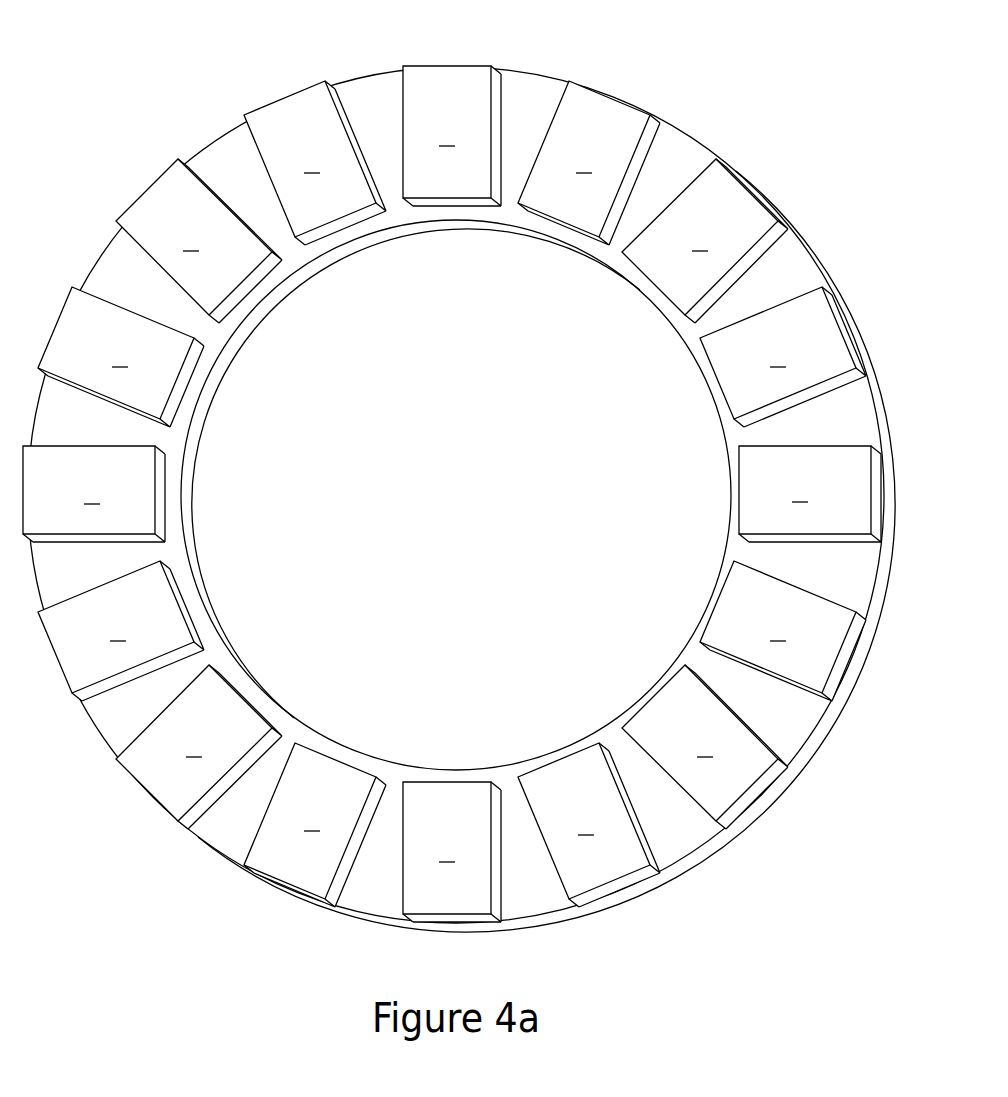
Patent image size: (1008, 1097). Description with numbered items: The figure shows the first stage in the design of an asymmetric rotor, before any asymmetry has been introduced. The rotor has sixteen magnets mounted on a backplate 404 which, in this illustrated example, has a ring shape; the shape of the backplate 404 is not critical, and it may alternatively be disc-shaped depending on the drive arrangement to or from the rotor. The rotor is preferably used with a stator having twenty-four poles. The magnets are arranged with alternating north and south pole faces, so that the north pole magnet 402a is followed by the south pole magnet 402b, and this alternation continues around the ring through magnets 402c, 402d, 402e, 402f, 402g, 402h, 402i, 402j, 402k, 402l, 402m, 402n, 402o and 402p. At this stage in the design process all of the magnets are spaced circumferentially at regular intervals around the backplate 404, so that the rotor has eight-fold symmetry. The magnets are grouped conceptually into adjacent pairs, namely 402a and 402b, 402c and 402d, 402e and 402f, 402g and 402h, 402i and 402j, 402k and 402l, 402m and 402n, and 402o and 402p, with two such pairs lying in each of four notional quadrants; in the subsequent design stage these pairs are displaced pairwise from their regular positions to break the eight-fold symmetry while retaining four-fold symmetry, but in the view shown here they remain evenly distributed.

The magnet 402a is at (458, 86).
The magnet 402b is at (602, 113).
The magnet 402c is at (738, 205).
The magnet 402d is at (742, 367).
The magnet 402e is at (757, 490).
The magnet 402f is at (740, 608).
The magnet 402g is at (668, 700).
The magnet 402h is at (600, 870).
The magnet 402i is at (443, 892).
The magnet 402j is at (298, 860).
The magnet 402k is at (165, 782).
The magnet 402l is at (160, 612).
The magnet 402m is at (143, 493).
The magnet 402n is at (168, 373).
The magnet 402o is at (163, 207).
The magnet 402p is at (292, 113).
The backplate 404 is at (675, 160).